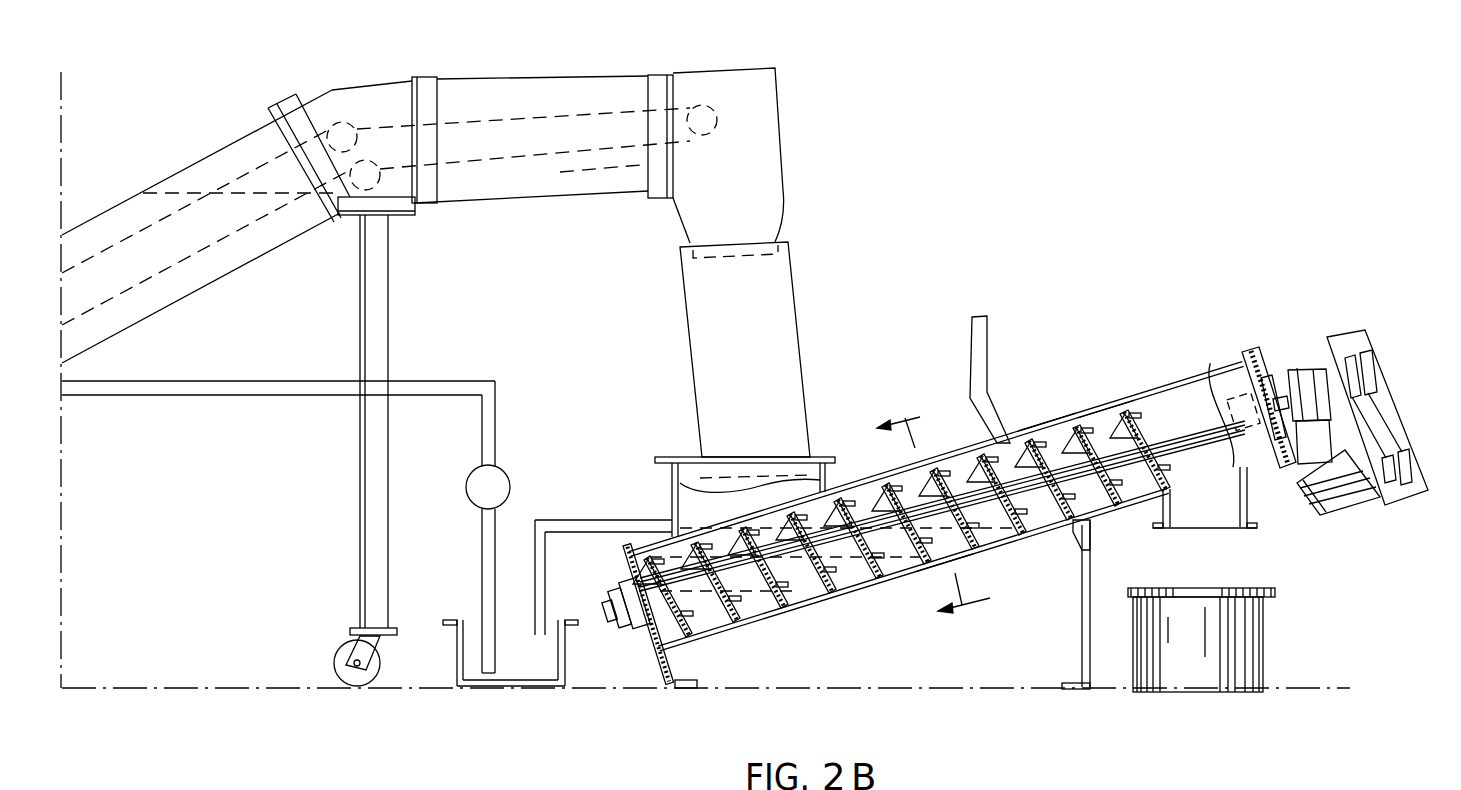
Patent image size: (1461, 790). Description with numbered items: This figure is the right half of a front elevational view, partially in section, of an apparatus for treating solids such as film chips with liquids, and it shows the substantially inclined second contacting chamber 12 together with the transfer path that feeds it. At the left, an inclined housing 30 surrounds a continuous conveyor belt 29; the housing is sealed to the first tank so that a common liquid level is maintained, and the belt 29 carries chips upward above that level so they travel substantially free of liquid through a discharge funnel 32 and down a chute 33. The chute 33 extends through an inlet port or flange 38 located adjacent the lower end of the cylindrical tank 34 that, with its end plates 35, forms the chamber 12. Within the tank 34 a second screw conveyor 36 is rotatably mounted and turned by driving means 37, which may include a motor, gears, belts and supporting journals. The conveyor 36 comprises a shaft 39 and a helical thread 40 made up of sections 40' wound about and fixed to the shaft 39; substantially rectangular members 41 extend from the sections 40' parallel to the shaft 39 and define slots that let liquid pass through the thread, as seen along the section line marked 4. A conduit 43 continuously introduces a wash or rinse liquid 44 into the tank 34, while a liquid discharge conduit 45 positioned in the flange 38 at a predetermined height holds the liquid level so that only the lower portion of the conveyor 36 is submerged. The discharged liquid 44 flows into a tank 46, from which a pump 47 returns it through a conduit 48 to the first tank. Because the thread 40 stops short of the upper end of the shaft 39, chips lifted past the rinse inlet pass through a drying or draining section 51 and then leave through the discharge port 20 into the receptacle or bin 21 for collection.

The second contacting chamber 12 is at (1117, 397).
The discharge port 20 is at (1248, 510).
The receptacle or bin 21 is at (1264, 660).
The continuous conveyor belt 29 is at (572, 178).
The housing 30 is at (553, 80).
The discharge funnel 32 is at (784, 137).
The chute 33 is at (800, 352).
The cylindrical tank 34 is at (1057, 415).
The end plates 35 is at (655, 648).
The second screw conveyor 36 is at (881, 580).
The driving means 37 is at (1340, 512).
The inlet port or flange 38 is at (670, 474).
The shaft 39 is at (920, 573).
The helical thread 40 is at (712, 609).
The sections of thread 40' is at (788, 591).
The substantially rectangular members 41 is at (1036, 520).
The conduit 43 is at (987, 353).
The wash or rinse liquid 44 is at (760, 605).
The liquid discharge conduit 45 is at (590, 535).
The tank 46 is at (457, 657).
The pump 47 is at (512, 482).
The conduit 48 is at (498, 395).
The drying or draining section 51 is at (1113, 417).
The section line 4- 4 is at (941, 506).